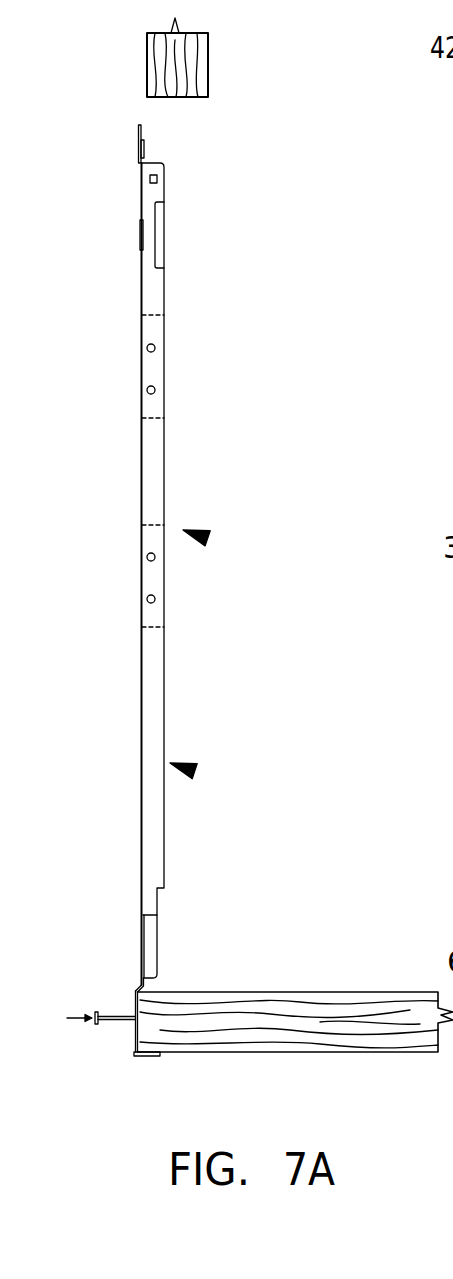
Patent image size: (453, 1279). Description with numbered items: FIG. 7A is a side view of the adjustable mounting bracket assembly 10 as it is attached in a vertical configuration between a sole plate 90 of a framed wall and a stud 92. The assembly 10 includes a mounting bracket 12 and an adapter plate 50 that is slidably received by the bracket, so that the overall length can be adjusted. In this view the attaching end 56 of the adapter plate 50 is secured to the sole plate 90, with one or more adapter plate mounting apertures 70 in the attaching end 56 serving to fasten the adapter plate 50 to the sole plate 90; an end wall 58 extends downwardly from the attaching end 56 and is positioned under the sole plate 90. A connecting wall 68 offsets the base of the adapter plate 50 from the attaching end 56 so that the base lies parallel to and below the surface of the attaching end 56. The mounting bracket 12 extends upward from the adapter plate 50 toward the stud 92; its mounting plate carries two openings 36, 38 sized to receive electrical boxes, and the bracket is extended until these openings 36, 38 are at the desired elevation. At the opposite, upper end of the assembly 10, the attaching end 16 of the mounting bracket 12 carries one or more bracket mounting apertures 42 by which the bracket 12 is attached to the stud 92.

The adjustable mounting bracket assembly 10 is at (207, 538).
The mounting bracket 12 is at (194, 771).
The attaching end 16 is at (128, 130).
The opening 36 is at (138, 580).
The opening 38 is at (140, 372).
The bracket mounting aperture 42 is at (133, 152).
The adapter plate 50 is at (123, 920).
The attaching end 56 is at (137, 1035).
The end wall 58 is at (160, 1057).
The connecting wall 68 is at (132, 987).
The adapter plate mounting aperture 70 is at (130, 1015).
The sole plate 90 is at (315, 990).
The stud 92 is at (210, 70).